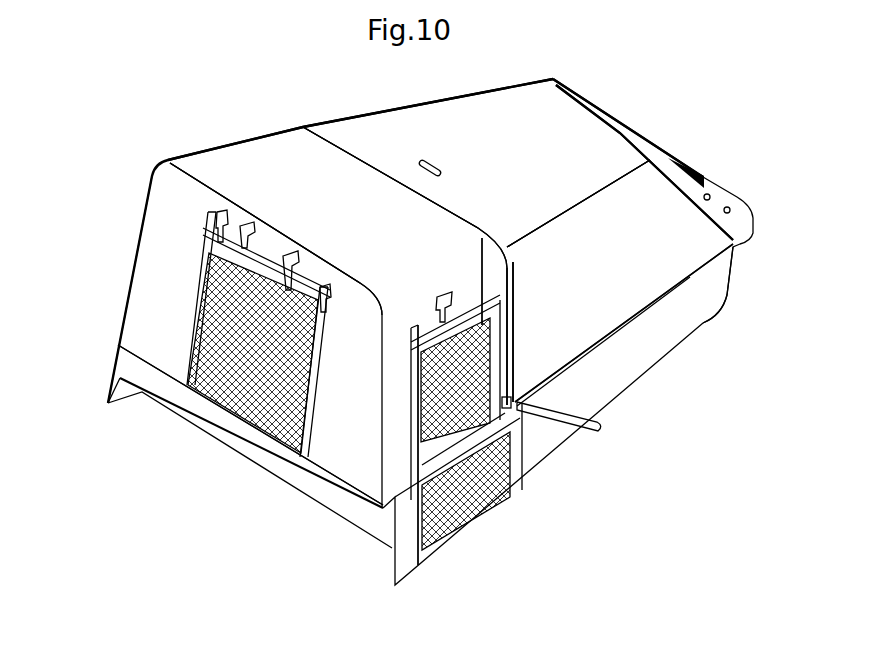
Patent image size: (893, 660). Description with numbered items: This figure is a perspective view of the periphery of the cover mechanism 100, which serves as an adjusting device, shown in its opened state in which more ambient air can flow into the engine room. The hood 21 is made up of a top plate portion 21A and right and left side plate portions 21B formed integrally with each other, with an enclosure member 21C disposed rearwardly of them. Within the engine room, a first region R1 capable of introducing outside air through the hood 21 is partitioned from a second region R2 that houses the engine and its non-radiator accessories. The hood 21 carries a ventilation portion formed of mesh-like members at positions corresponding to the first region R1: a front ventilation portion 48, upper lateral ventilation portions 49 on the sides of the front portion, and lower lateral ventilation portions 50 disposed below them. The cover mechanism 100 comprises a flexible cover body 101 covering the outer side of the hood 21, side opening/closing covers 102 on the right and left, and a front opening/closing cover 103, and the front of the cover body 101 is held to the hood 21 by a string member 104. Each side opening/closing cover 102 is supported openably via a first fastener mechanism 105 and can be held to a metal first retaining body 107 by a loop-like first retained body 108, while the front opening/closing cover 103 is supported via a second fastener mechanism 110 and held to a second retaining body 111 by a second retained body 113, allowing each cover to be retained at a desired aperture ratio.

The cover mechanism 100 is at (86, 161).
The hood 21 is at (312, 95).
The top plate portion 21A is at (487, 107).
The side plate portion 21B is at (672, 282).
The enclosure member 21C is at (612, 115).
The first region R1 is at (246, 153).
The second region R2 is at (421, 98).
The cover body 101 is at (153, 247).
The side opening/closing cover 102 is at (498, 287).
The front opening/closing cover 103 is at (212, 226).
The string member 104 is at (567, 424).
The first fastener mechanism 105 is at (400, 313).
The first retaining body 107 is at (447, 291).
The first retained body 108 is at (440, 322).
The second fastener mechanism 110 is at (218, 217).
The second retaining body 111 is at (287, 252).
The second retained body 113 is at (200, 258).
The front ventilation portion 48 is at (228, 394).
The upper lateral ventilation portion 49 is at (487, 345).
The lower lateral ventilation portion 50 is at (513, 475).